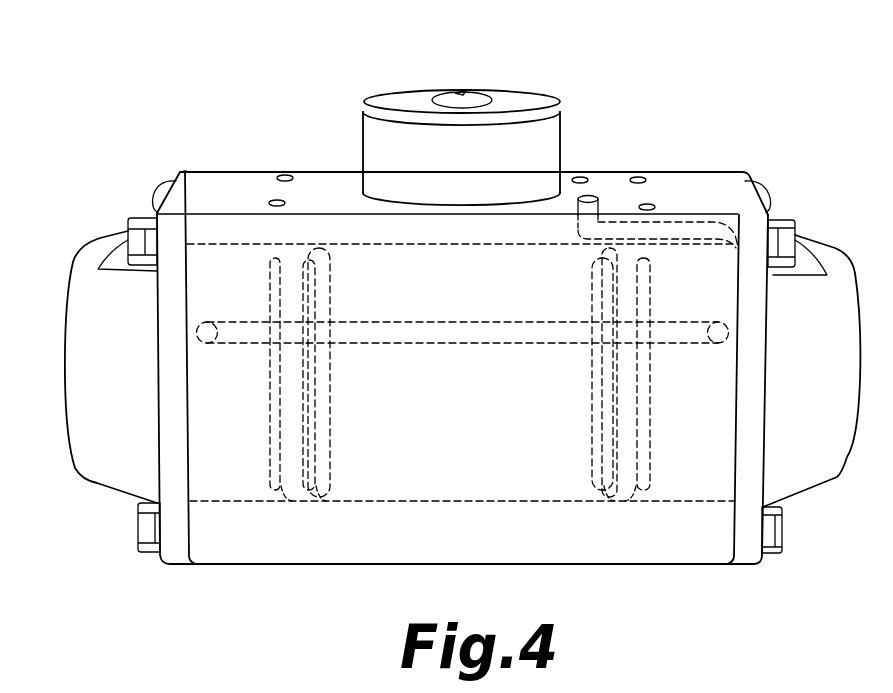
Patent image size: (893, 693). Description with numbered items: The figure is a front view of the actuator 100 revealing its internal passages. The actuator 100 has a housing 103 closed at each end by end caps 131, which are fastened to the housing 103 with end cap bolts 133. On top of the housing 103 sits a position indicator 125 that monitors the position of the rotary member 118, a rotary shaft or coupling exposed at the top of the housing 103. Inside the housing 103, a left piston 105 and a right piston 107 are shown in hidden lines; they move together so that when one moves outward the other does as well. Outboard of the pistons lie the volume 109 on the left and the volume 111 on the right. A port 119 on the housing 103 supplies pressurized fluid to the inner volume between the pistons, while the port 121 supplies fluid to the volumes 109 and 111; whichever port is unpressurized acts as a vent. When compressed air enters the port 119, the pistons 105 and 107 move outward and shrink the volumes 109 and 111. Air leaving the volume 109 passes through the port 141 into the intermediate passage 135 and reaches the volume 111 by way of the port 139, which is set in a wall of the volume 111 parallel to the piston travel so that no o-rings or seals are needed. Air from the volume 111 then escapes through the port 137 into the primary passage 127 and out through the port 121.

The actuator 100 is at (277, 118).
The housing 103 is at (670, 178).
The left piston 105 is at (302, 503).
The right piston 107 is at (613, 507).
The volume 109 is at (230, 412).
The volume 111 is at (690, 385).
The rotary member 118 is at (458, 92).
The port 119 is at (580, 174).
The port 121 is at (593, 197).
The position indicator 125 is at (553, 107).
The primary passage 127 is at (712, 220).
The end caps 131 is at (67, 317).
The end cap bolts 133 is at (140, 217).
The intermediate passage 135 is at (430, 344).
The port 137 is at (712, 244).
The port 139 is at (730, 333).
The port 141 is at (207, 321).